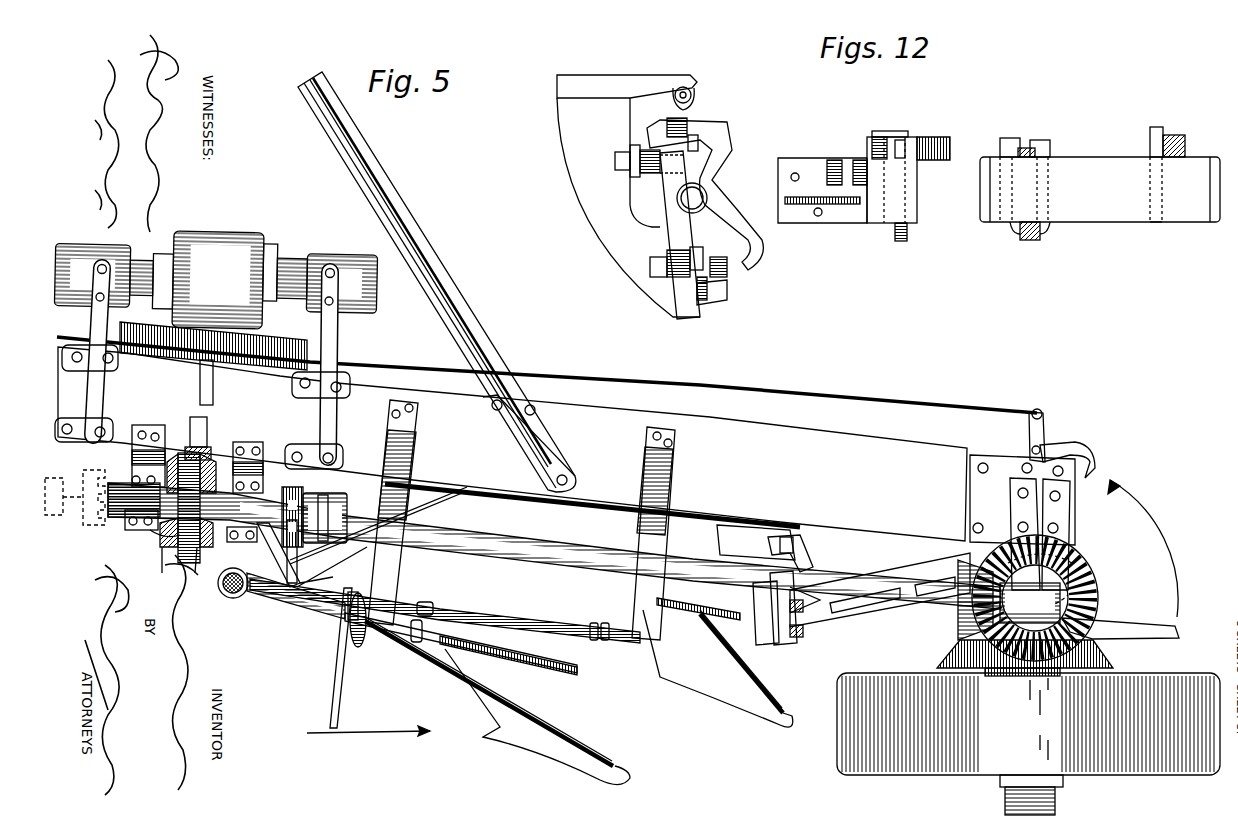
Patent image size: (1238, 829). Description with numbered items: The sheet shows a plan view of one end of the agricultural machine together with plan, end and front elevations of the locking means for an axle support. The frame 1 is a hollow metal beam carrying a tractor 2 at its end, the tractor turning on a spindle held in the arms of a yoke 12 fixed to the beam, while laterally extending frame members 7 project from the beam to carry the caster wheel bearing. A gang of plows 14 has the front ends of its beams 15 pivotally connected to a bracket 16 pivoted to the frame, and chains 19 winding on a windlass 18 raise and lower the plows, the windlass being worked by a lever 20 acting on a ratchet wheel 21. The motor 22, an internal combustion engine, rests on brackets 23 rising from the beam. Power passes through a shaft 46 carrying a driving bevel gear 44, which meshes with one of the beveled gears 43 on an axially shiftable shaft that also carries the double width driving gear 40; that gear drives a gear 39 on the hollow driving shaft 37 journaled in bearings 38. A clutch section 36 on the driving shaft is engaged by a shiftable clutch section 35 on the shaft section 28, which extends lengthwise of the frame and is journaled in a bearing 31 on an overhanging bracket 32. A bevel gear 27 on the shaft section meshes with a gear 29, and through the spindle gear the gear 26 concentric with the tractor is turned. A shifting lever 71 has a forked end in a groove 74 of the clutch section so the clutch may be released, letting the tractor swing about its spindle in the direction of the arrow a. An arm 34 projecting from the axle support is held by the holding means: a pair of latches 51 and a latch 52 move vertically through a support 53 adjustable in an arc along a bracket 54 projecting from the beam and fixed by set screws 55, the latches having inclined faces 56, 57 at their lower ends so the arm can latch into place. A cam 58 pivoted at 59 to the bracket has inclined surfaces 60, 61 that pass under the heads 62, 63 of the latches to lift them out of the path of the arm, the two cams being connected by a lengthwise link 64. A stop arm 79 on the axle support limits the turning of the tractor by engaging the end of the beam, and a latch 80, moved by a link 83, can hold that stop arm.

In FIG. 5, the frame 1 is at (512, 444).
In FIG. 5, the tractor 2 is at (1028, 744).
In FIG. 5, the laterally extending frame members 7 is at (412, 201).
In FIG. 5, the bracket or yoke 12 is at (967, 497).
In FIG. 5, the gang of plows 14 is at (715, 691).
In FIG. 5, the plow beams 15 is at (490, 648).
In FIG. 5, the bracket 16 is at (218, 575).
In FIG. 5, the windlass 18 is at (478, 612).
In FIG. 5, the chains 19 is at (415, 636).
In FIG. 5, the lever 20 is at (340, 681).
In FIG. 5, the ratchet wheel 21 is at (347, 619).
In FIG. 5, the motor 22 is at (220, 245).
In FIG. 5, the brackets 23 is at (100, 373).
In FIG. 5, the gear 26 is at (1105, 659).
In FIG. 5, the bevel gear 27 is at (960, 573).
In FIG. 5, the shaft section 28 is at (495, 540).
In FIG. 5, the gear 29 is at (1086, 600).
In FIG. 5, the bearing 31 is at (1065, 571).
In FIG. 5, the overhanging bracket 32 is at (1052, 544).
In FIG. 5, the arm 34 is at (888, 633).
In FIG. 12, the arm 34 is at (1032, 241).
In FIG. 5, the shiftable clutch section 35 is at (343, 522).
In FIG. 5, the clutch section 36 is at (283, 500).
In FIG. 5, the driving shaft 37 is at (153, 537).
In FIG. 5, the bearings 38 is at (265, 470).
In FIG. 5, the gear 39 is at (210, 452).
In FIG. 5, the double width driving gear 40 is at (132, 460).
In FIG. 5, the beveled gears 43 is at (205, 558).
In FIG. 5, the driving bevel gear 44 is at (186, 447).
In FIG. 5, the shaft 46 is at (214, 384).
In FIG. 5, the latches 51 is at (800, 639).
In FIG. 12, the latches 51 is at (706, 284).
In FIG. 5, the latch 52 is at (795, 541).
In FIG. 12, the latch 52 is at (698, 138).
In FIG. 5, the support 53 is at (790, 653).
In FIG. 12, the support 53 is at (706, 308).
In FIG. 5, the bracket 54 is at (770, 626).
In FIG. 12, the bracket 54 is at (625, 238).
In FIG. 12, the set screws 55 is at (613, 160).
In FIG. 12, the cam or inclined face 56 is at (1010, 233).
In FIG. 12, the cam or inclined face 57 is at (1156, 225).
In FIG. 5, the cam 58 is at (812, 554).
In FIG. 12, the cam 58 is at (718, 166).
In FIG. 12, the pivot 59 is at (708, 203).
In FIG. 12, the inclined surface 60 is at (722, 295).
In FIG. 12, the inclined surface 61 is at (690, 128).
In FIG. 5, the head 62 is at (790, 606).
In FIG. 12, the head 62 is at (1035, 153).
In FIG. 5, the head 63 is at (770, 551).
In FIG. 12, the head 63 is at (1185, 134).
In FIG. 5, the link 64 is at (692, 514).
In FIG. 5, the shifting lever 71 is at (317, 498).
In FIG. 5, the groove 74 is at (306, 545).
In FIG. 5, the stop arm 79 is at (1148, 631).
In FIG. 5, the latch 80 is at (1075, 456).
In FIG. 5, the links 83 is at (740, 395).
In FIG. 5, the arrow a is at (1143, 546).